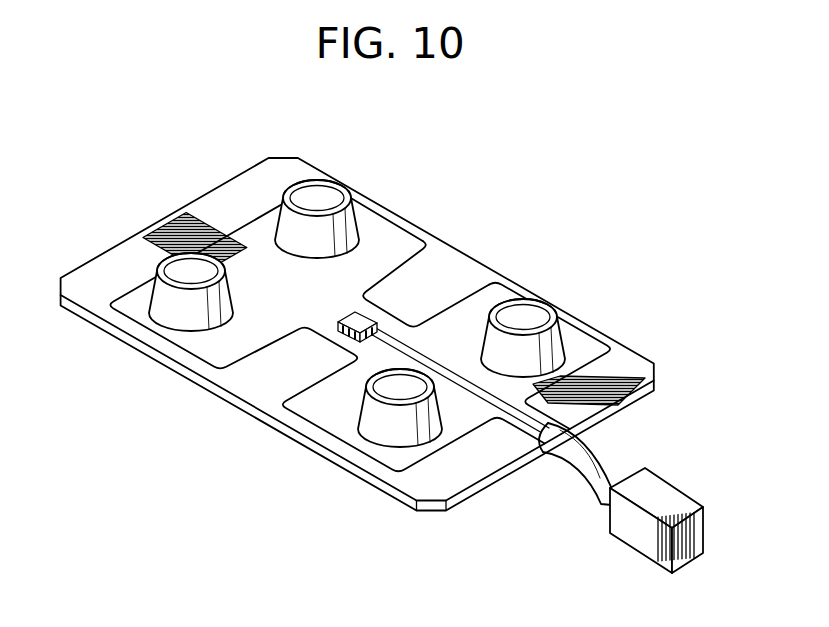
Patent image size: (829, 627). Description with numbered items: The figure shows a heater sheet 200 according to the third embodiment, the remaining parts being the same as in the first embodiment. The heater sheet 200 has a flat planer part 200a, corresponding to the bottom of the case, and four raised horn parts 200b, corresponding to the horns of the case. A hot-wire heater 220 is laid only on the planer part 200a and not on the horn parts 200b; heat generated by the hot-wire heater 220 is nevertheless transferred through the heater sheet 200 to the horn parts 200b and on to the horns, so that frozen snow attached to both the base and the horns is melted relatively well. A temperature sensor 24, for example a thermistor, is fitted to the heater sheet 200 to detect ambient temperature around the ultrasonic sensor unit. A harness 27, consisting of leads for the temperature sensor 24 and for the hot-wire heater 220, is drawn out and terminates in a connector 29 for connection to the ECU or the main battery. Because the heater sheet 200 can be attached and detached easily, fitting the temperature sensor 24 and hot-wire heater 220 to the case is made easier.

The heater sheet 200 is at (216, 396).
The planer part 200a is at (463, 283).
The horn parts 200b is at (352, 212).
The hot-wire heater 220 is at (438, 238).
The temperature sensor 24 is at (338, 336).
The harness 27 is at (585, 476).
The connector 29 is at (645, 538).